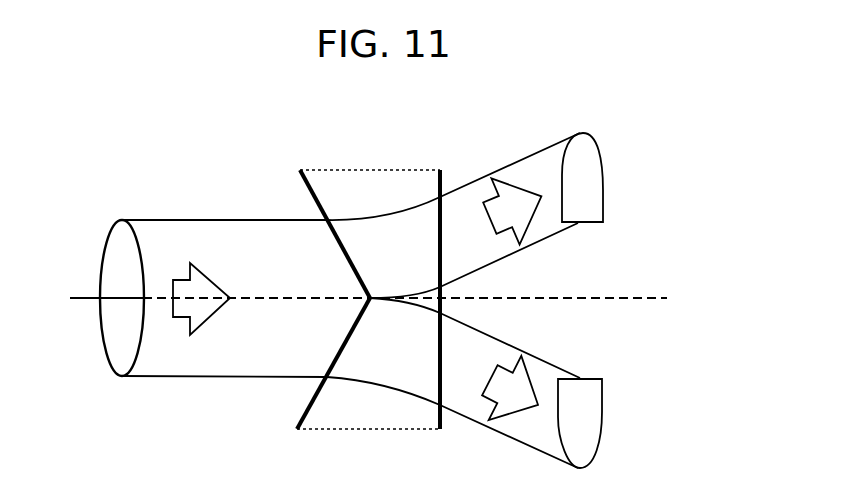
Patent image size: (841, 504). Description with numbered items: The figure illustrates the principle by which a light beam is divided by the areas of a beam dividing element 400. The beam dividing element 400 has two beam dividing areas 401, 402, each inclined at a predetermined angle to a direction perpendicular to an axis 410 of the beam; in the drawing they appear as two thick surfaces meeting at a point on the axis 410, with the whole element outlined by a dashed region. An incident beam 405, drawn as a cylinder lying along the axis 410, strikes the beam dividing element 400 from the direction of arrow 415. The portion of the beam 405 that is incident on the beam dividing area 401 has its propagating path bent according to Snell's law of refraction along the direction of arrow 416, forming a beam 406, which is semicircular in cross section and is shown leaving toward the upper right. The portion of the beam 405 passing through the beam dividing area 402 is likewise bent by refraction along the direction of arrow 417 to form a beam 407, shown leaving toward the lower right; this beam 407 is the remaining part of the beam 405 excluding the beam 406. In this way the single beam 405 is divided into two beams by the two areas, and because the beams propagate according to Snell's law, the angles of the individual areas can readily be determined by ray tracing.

The beam dividing element 400 is at (333, 273).
The beam dividing area 401 is at (298, 234).
The beam dividing area 402 is at (304, 403).
The beam 405 is at (109, 342).
The beam 406 is at (593, 176).
The beam 407 is at (590, 430).
The axis 410 is at (667, 298).
The arrow 415 is at (212, 318).
The arrow 416 is at (513, 195).
The arrow 417 is at (513, 405).